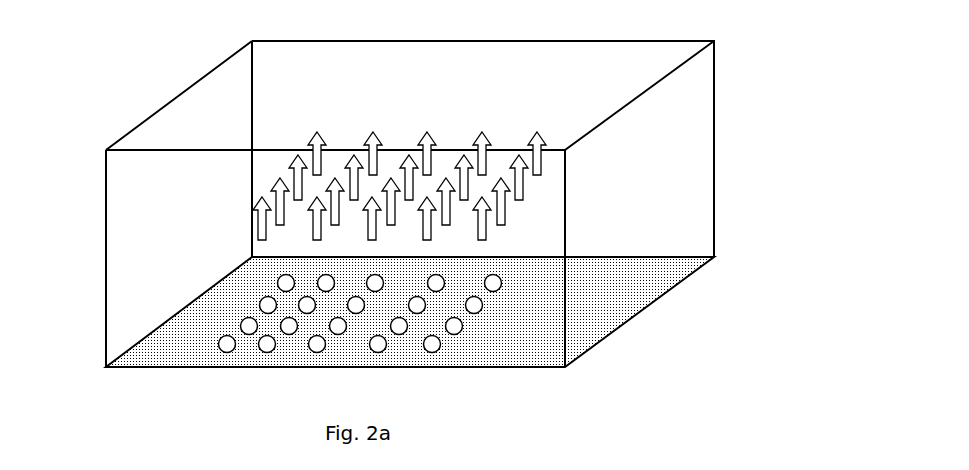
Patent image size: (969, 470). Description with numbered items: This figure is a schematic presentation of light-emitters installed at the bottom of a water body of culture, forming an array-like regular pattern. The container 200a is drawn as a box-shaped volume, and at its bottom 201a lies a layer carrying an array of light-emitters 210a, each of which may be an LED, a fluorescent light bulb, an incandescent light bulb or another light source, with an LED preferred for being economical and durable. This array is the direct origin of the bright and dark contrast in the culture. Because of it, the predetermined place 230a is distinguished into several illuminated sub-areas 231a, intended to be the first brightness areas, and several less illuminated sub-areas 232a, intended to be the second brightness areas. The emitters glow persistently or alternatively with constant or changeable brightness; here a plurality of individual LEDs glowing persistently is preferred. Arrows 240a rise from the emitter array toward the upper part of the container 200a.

The container 200a is at (236, 52).
The bottom 201a is at (160, 348).
The light-emitter 210a is at (229, 340).
The predetermined place 230a is at (410, 312).
The illuminated sub-area 231a is at (503, 278).
The less illuminated sub-area 232a is at (463, 289).
The flow arrows 240a is at (525, 190).